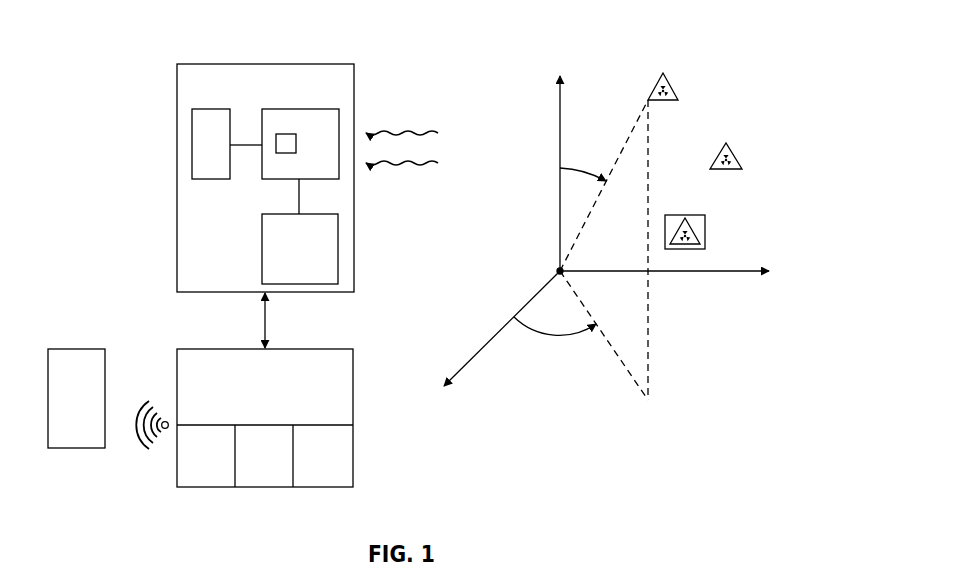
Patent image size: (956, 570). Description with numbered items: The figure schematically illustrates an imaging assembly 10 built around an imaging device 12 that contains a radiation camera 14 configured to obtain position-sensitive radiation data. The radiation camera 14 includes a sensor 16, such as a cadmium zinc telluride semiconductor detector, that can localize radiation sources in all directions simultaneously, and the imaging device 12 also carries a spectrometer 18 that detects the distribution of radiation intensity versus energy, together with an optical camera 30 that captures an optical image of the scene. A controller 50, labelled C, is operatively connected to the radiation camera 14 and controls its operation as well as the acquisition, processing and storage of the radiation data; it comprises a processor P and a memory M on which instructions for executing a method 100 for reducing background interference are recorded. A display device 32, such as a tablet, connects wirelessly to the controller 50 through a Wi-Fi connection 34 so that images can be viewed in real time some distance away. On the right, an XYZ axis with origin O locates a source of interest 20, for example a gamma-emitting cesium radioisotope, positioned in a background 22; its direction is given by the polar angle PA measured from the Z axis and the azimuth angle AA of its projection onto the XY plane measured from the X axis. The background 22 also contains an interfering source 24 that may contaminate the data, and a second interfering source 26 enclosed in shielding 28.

The imaging assembly 10 is at (108, 25).
The imaging device 12 is at (203, 63).
The radiation camera 14 is at (297, 109).
The sensor 16 is at (286, 133).
The spectrometer 18 is at (192, 145).
The optical camera 30 is at (298, 214).
The controller 50 is at (207, 349).
The method 100 is at (282, 469).
The display device 32 is at (75, 349).
The Wi-Fi connection 34 is at (154, 471).
The background 22 is at (769, 37).
The source of interest 20 is at (663, 73).
The interfering source 24 is at (726, 143).
The second interfering source 26 is at (694, 228).
The shielding 28 is at (705, 238).